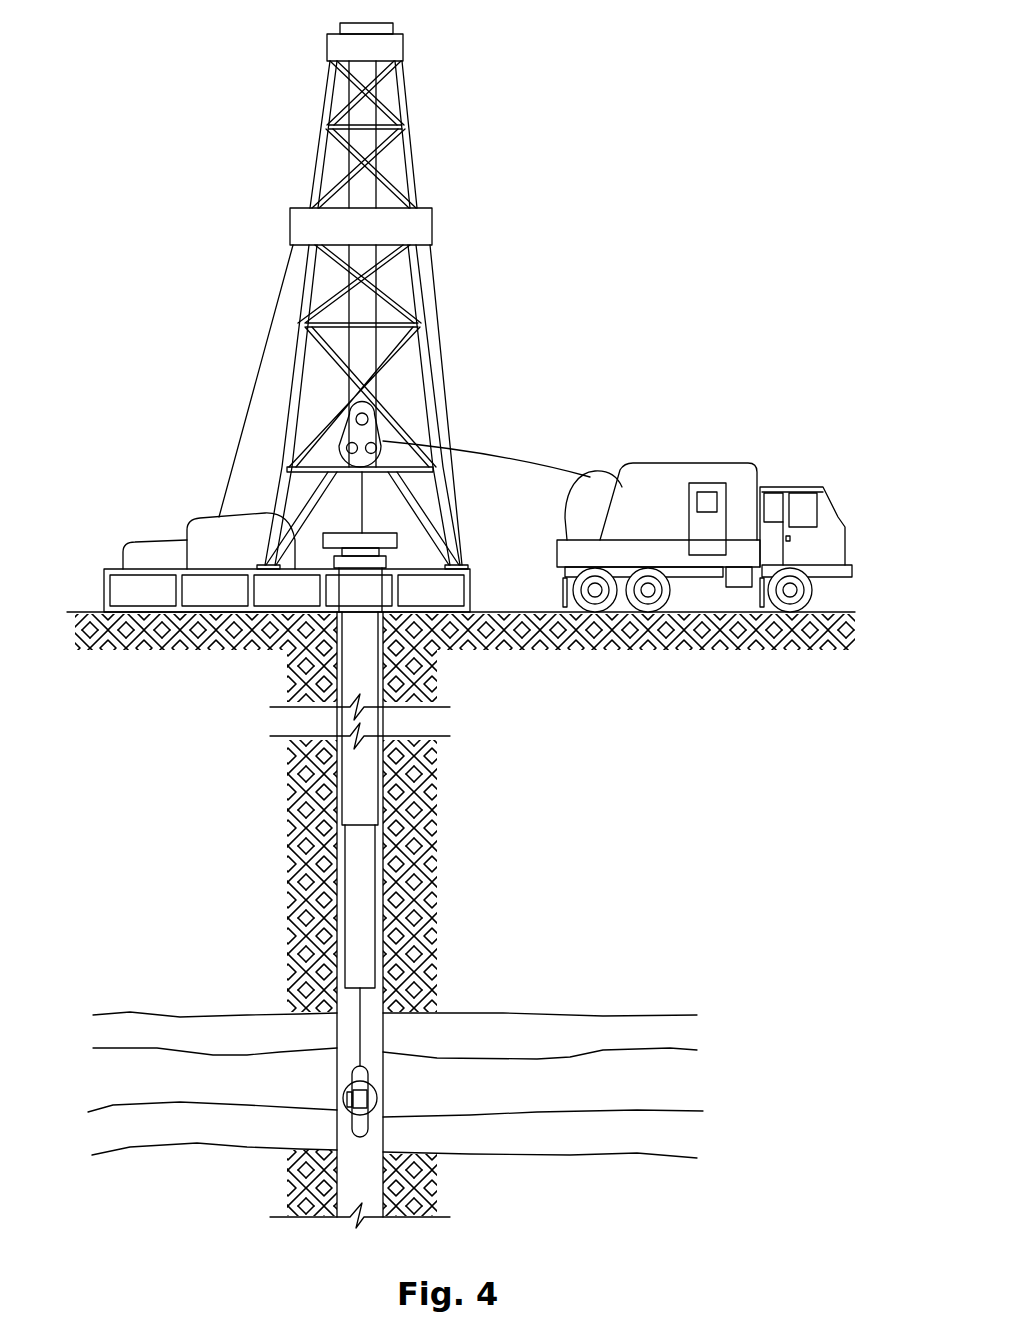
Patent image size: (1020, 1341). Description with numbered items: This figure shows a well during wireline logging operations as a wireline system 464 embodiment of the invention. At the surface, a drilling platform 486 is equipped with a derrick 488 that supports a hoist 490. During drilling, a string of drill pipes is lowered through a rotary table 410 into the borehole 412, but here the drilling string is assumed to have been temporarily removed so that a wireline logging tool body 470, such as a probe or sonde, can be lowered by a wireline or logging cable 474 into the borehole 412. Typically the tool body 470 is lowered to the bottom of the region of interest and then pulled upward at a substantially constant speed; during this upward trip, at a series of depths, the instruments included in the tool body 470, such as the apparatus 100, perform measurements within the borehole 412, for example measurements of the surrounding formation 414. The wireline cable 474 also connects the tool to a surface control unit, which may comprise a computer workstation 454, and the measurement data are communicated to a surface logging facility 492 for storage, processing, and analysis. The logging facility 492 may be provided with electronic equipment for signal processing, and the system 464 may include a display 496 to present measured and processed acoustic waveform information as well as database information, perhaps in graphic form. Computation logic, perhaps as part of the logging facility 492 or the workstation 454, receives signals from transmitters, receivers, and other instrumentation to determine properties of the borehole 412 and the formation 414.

The wireline system 464 is at (630, 243).
The hoist 490 is at (378, 408).
The wireline or logging cable 474 is at (488, 455).
The surface logging facility 492 is at (652, 463).
The display 496 is at (707, 492).
The workstation 454 is at (687, 530).
The rotary table 410 is at (397, 533).
The derrick 488 is at (459, 566).
The drilling platform 486 is at (471, 597).
The borehole 412 is at (340, 1026).
The apparatus 100 is at (378, 1084).
The wireline logging tool body 470 is at (368, 1130).
The formation 414 is at (710, 1005).